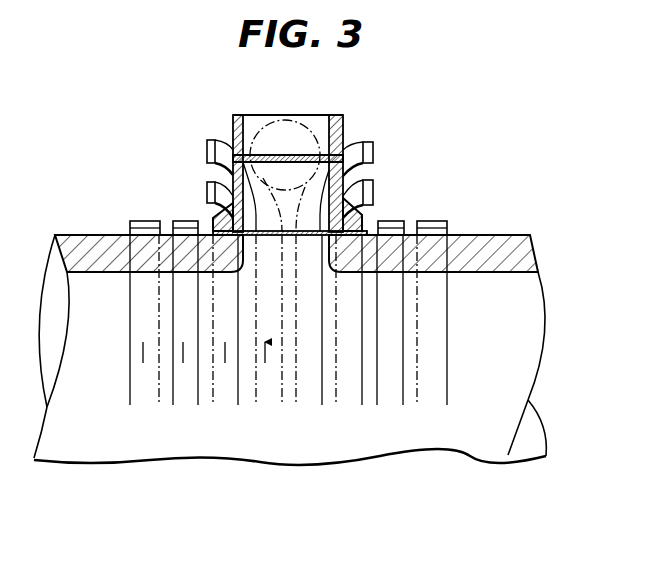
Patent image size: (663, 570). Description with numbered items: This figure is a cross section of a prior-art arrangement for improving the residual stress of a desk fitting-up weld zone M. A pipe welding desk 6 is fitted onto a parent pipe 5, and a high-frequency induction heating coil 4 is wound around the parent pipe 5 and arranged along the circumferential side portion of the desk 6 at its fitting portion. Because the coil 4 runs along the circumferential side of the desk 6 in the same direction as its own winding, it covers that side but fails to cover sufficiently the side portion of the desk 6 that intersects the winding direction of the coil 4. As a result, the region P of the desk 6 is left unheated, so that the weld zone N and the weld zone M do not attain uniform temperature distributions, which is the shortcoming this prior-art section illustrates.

The parent pipe 5 is at (88, 244).
The pipe welding desk 6 is at (237, 133).
The weld zone N is at (343, 137).
The desk fitting-up weld zone M is at (363, 217).
The region P is at (305, 120).
The high-frequency induction heating coil 4 is at (376, 152).